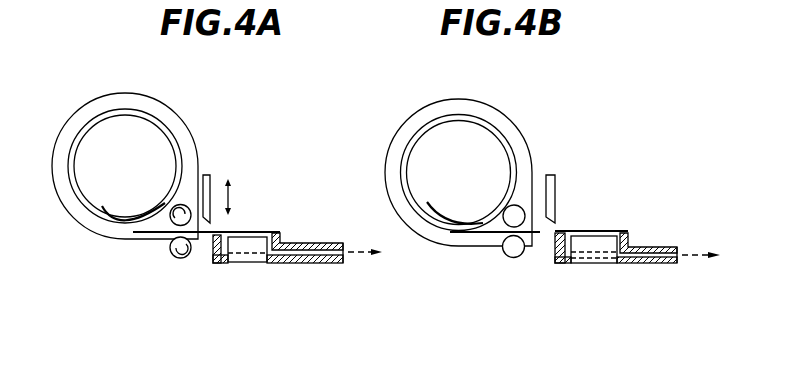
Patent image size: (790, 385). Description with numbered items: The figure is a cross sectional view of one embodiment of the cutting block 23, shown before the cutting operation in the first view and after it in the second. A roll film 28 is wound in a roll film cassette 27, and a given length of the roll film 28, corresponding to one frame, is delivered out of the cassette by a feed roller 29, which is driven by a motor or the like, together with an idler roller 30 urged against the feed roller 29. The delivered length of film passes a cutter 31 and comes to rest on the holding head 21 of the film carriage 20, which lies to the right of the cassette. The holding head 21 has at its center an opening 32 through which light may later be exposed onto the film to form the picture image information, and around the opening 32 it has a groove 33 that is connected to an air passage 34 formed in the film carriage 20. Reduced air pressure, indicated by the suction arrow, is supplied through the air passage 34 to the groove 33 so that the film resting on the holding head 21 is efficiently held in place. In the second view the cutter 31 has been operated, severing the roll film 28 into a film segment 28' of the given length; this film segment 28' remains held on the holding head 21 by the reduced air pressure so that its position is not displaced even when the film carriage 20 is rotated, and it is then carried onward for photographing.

In FIG. 4A, the film carriage 20 is at (295, 271).
In FIG. 4B, the film carriage 20 is at (653, 305).
In FIG. 4A, the holding head 21 is at (219, 263).
In FIG. 4A, the cutting block 23 is at (137, 81).
In FIG. 4B, the cutting block 23 is at (416, 101).
In FIG. 4A, the roll film cassette 27 is at (167, 118).
In FIG. 4B, the roll film cassette 27 is at (528, 143).
In FIG. 4A, the roll film 28 is at (187, 248).
In FIG. 4B, the roll film 28 is at (480, 252).
In FIG. 4B, the film segment 28' is at (610, 208).
In FIG. 4A, the feed roller 29 is at (187, 258).
In FIG. 4B, the feed roller 29 is at (510, 251).
In FIG. 4A, the idler roller 30 is at (189, 207).
In FIG. 4B, the idler roller 30 is at (520, 208).
In FIG. 4A, the cutter 31 is at (212, 178).
In FIG. 4B, the cutter 31 is at (558, 192).
In FIG. 4A, the opening 32 is at (248, 237).
In FIG. 4B, the opening 32 is at (593, 236).
In FIG. 4A, the groove 33 is at (279, 233).
In FIG. 4B, the groove 33 is at (630, 240).
In FIG. 4A, the air passage 34 is at (337, 262).
In FIG. 4B, the air passage 34 is at (673, 264).